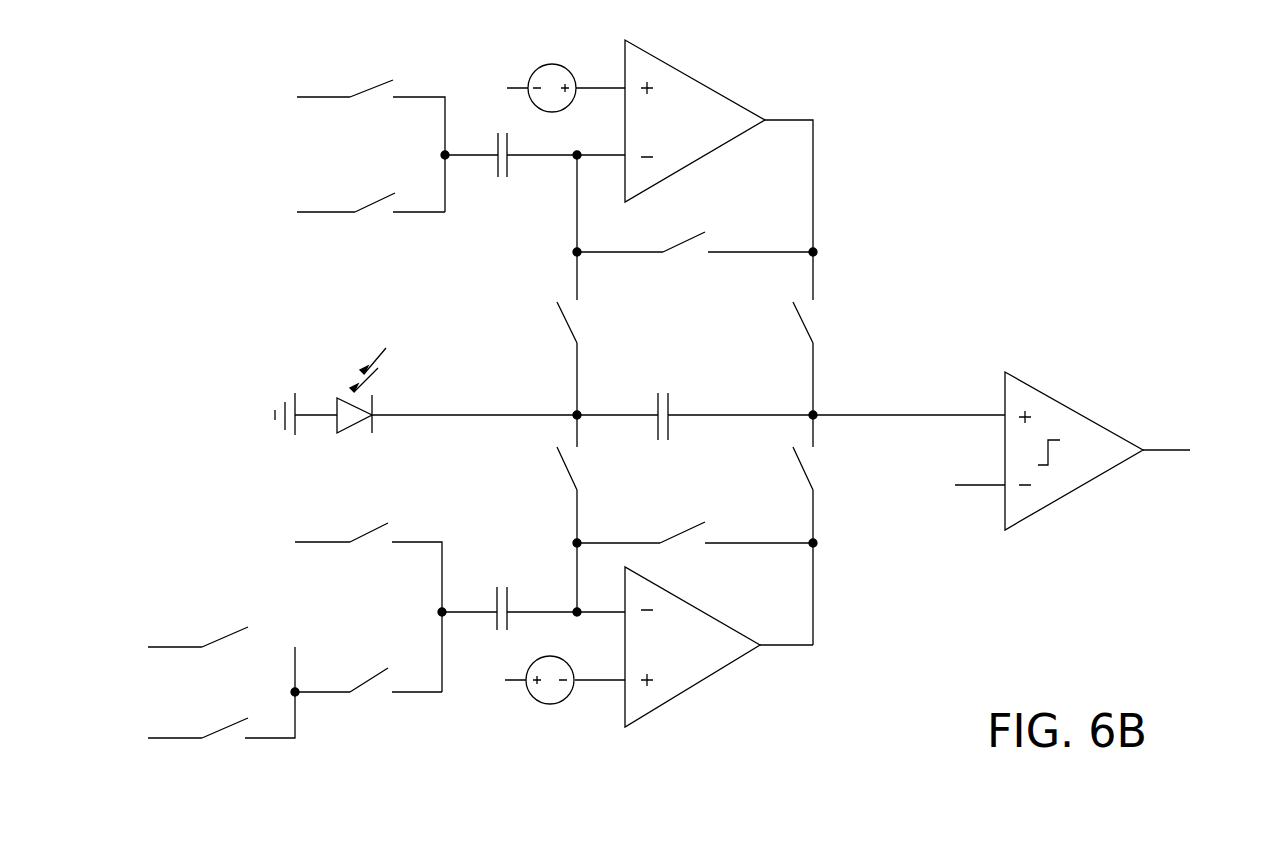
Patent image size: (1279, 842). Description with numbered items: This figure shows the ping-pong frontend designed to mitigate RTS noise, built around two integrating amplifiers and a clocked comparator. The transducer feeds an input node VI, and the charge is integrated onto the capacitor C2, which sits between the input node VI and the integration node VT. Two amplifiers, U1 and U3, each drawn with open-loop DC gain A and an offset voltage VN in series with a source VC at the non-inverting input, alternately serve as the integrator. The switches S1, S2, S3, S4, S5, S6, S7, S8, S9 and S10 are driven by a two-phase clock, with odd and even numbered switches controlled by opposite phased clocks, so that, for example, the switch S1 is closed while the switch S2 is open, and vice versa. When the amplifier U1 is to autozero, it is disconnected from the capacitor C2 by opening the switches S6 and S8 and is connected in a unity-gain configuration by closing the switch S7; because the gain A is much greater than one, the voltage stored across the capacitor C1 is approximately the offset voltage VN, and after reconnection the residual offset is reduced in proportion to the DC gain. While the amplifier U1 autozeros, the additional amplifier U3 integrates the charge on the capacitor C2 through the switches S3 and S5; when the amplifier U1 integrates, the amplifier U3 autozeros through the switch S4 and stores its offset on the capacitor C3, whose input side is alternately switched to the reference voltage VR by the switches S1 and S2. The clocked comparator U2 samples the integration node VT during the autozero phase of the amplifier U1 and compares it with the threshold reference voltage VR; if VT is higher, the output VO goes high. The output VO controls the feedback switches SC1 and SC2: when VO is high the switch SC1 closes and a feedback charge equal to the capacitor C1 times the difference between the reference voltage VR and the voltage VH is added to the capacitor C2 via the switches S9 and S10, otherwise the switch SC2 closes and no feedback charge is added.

The switch S1 is at (397, 146).
The switch S2 is at (400, 221).
The switch S3 is at (588, 333).
The switch S4 is at (695, 222).
The switch S5 is at (827, 333).
The switch S6 is at (588, 513).
The switch S7 is at (695, 554).
The switch S8 is at (828, 530).
The switch S9 is at (396, 607).
The switch S10 is at (366, 698).
The switch SC1 is at (236, 618).
The switch SC2 is at (248, 692).
The capacitor C1 is at (531, 592).
The capacitor C2 is at (728, 398).
The capacitor C3 is at (533, 171).
The amplifier U1 is at (719, 647).
The clocked comparator U2 is at (1074, 451).
The amplifier U3 is at (719, 146).
The reference voltage VR is at (550, 418).
The amplifier input voltage source VC is at (541, 384).
The offset voltage VN is at (550, 385).
The feedback voltage VH is at (148, 646).
The input voltage node VI is at (466, 391).
The integrator output voltage VT is at (907, 398).
The comparator output VO is at (1192, 454).